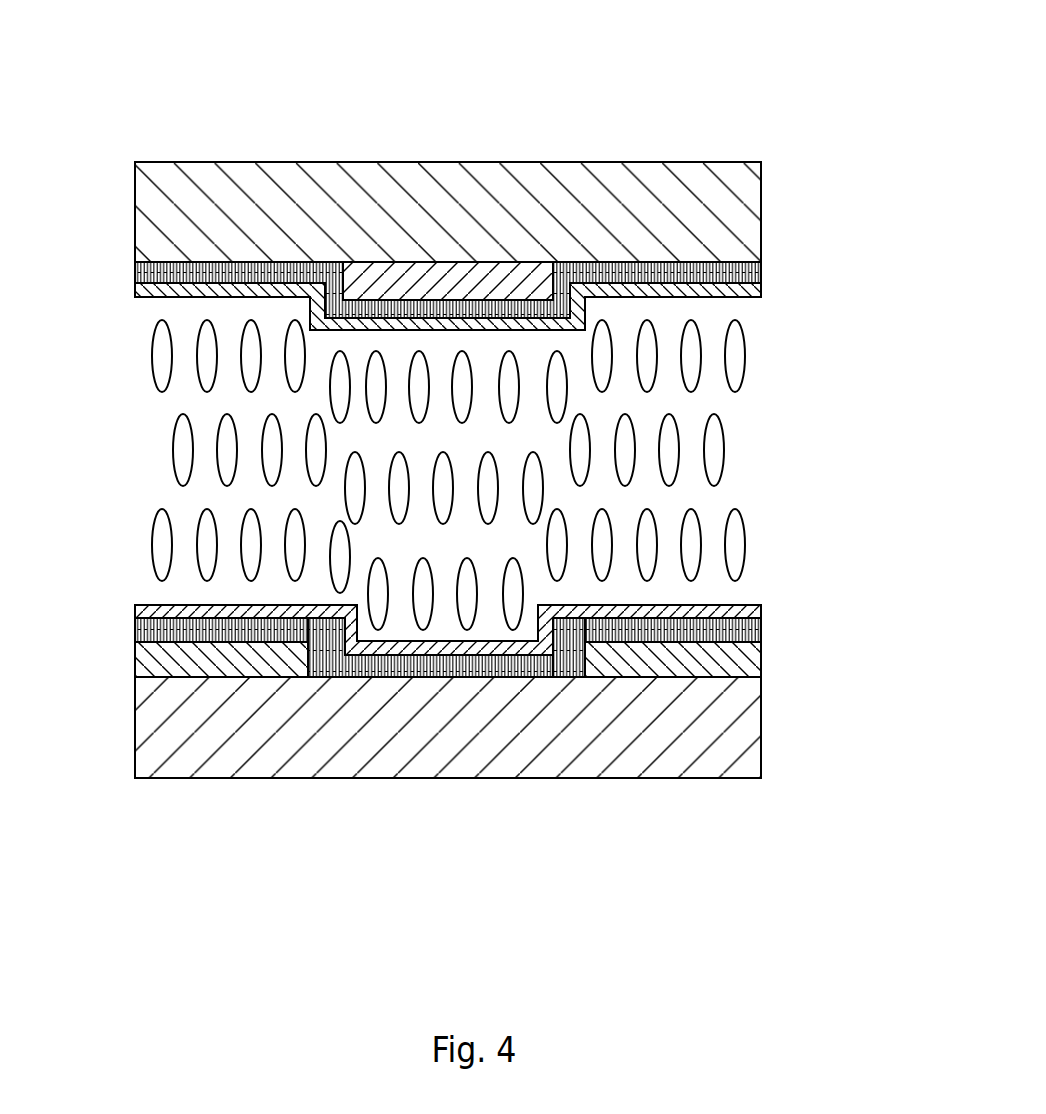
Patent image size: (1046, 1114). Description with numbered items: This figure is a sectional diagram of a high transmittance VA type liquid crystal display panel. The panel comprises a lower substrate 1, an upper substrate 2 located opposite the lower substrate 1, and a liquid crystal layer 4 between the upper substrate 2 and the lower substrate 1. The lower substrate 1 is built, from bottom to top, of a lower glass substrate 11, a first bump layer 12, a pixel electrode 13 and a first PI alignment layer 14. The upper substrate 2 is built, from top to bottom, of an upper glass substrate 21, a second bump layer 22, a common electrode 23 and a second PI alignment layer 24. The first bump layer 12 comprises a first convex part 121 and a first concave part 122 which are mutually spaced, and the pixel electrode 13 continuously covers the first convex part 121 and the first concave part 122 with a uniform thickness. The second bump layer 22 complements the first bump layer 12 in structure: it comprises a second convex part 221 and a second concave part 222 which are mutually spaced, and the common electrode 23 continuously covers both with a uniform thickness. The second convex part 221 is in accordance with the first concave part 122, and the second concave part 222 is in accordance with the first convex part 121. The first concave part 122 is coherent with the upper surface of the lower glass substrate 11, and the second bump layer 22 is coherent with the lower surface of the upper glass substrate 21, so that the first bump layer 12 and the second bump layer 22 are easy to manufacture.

The lower substrate 1 is at (107, 605).
The lower glass substrate 11 is at (761, 725).
The first bump layer 12 is at (467, 885).
The first convex part 121 is at (632, 662).
The first concave part 122 is at (440, 670).
The pixel electrode 13 is at (761, 630).
The first PI alignment layer 14 is at (761, 611).
The upper substrate 2 is at (107, 162).
The upper glass substrate 21 is at (761, 192).
The second bump layer 22 is at (510, 48).
The second convex part 221 is at (452, 283).
The second concave part 222 is at (664, 274).
The common electrode 23 is at (761, 273).
The second PI alignment layer 24 is at (761, 290).
The liquid crystal layer 4 is at (713, 453).